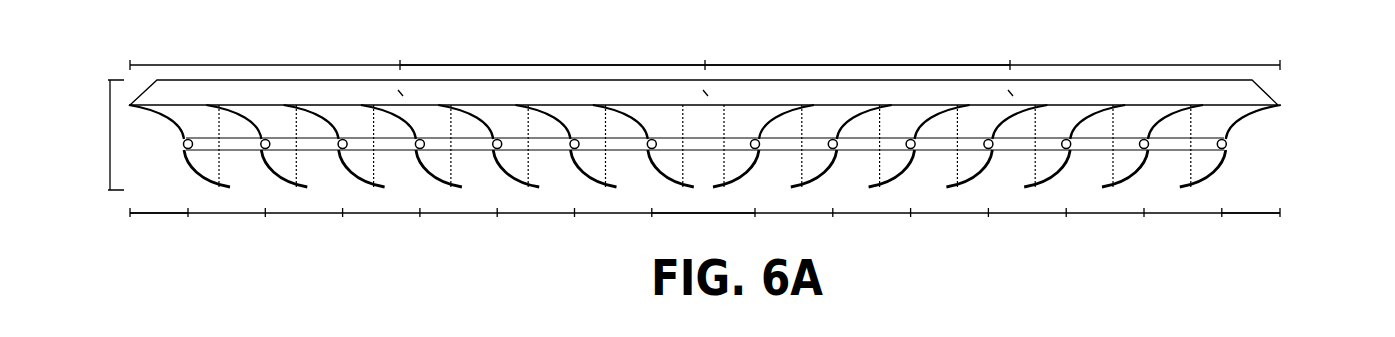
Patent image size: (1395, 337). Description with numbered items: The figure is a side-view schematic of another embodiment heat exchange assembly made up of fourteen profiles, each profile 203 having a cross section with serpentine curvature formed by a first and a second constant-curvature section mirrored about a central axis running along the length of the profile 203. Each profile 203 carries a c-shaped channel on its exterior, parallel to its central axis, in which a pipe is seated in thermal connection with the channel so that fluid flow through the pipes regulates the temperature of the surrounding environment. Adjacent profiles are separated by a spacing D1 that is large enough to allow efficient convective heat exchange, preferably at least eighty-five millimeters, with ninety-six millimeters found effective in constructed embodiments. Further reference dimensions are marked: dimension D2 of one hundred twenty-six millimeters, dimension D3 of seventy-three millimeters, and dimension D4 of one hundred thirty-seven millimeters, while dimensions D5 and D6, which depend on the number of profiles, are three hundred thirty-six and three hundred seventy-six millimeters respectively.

The profile 203 is at (1238, 118).
The spacing between adjacent profiles D1 is at (705, 222).
The dimension D2 is at (703, 225).
The dimension D3 is at (705, 225).
The dimension D4 is at (102, 135).
The dimension D5 is at (705, 55).
The dimension D6 is at (705, 55).